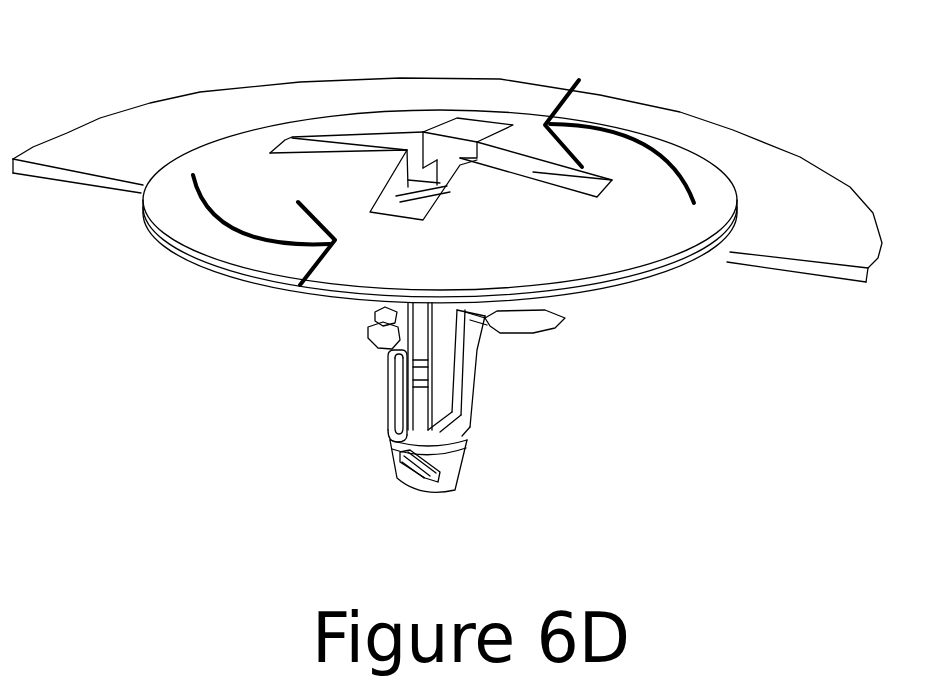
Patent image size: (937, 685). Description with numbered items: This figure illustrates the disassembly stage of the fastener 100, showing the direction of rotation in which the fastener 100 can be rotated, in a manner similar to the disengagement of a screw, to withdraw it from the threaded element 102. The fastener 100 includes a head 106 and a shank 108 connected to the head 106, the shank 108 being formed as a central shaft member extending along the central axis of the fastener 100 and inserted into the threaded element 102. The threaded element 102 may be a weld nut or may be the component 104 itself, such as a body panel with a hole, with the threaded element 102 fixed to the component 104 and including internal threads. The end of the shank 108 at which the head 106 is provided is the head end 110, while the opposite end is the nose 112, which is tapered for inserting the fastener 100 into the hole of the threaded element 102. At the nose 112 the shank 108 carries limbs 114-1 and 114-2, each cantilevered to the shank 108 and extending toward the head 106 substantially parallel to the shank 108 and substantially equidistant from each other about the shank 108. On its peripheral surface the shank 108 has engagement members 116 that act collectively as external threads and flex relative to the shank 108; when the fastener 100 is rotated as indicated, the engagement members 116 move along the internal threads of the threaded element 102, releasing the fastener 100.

The fastener 100 is at (712, 225).
The threaded element 102 is at (560, 317).
The component 104 is at (714, 157).
The head 106 is at (370, 120).
The shank 108 is at (418, 343).
The head end 110 is at (472, 112).
The nose 112 is at (426, 488).
The limb 114-1 is at (392, 368).
The limb 114-2 is at (460, 400).
The engagement member 116 is at (350, 333).